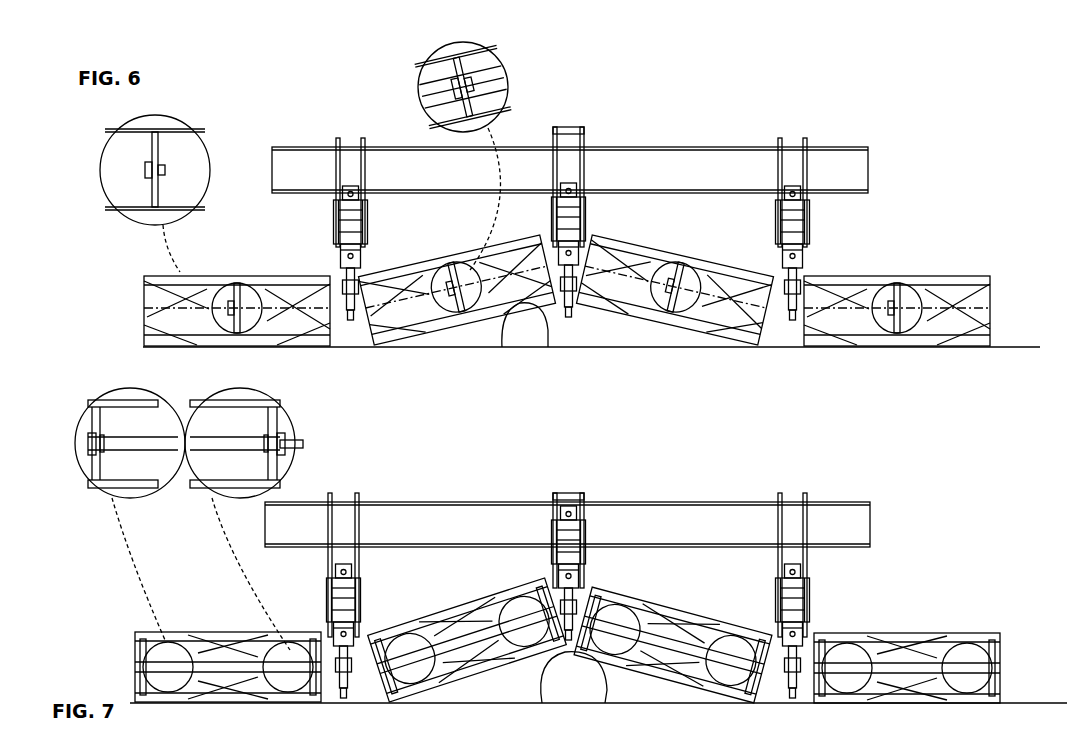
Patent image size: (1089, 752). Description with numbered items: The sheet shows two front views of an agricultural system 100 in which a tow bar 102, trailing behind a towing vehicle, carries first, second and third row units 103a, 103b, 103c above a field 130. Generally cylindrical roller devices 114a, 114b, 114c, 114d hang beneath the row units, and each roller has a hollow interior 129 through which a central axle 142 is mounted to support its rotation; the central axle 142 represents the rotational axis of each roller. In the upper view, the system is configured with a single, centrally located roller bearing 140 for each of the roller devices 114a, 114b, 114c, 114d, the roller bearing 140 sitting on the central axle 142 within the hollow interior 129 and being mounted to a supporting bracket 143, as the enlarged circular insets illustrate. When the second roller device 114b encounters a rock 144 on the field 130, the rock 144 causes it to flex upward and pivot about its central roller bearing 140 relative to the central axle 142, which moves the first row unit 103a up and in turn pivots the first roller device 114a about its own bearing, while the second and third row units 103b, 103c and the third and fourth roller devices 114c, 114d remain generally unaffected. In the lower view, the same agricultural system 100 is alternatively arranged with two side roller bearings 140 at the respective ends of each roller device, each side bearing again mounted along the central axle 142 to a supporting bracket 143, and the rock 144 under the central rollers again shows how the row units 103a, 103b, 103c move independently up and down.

In FIG. 6, the agricultural system 100 is at (968, 92).
In FIG. 7, the agricultural system 100 is at (968, 444).
In FIG. 6, the tow bar 102 is at (860, 175).
In FIG. 7, the tow bar 102 is at (860, 528).
In FIG. 6, the first row unit 103a is at (588, 214).
In FIG. 7, the first row unit 103a is at (588, 570).
In FIG. 6, the second row unit 103b is at (368, 238).
In FIG. 7, the second row unit 103b is at (366, 590).
In FIG. 6, the third row unit 103c is at (808, 238).
In FIG. 7, the third row unit 103c is at (808, 590).
In FIG. 6, the first roller device 114a is at (722, 316).
In FIG. 7, the first roller device 114a is at (718, 645).
In FIG. 6, the second roller device 114b is at (418, 318).
In FIG. 7, the second roller device 114b is at (490, 625).
In FIG. 6, the third roller device 114c is at (165, 323).
In FIG. 7, the third roller device 114c is at (188, 655).
In FIG. 6, the fourth roller device 114d is at (962, 328).
In FIG. 7, the fourth roller device 114d is at (955, 655).
In FIG. 6, the hollow interior 129 is at (440, 105).
In FIG. 6, the field 130 is at (1032, 346).
In FIG. 7, the field 130 is at (1038, 702).
In FIG. 6, the roller bearing 140 is at (146, 170).
In FIG. 7, the roller bearing 140 is at (88, 440).
In FIG. 6, the central axle 142 is at (188, 166).
In FIG. 7, the central axle 142 is at (118, 437).
In FIG. 6, the supporting bracket 143 is at (148, 150).
In FIG. 7, the supporting bracket 143 is at (92, 420).
In FIG. 6, the rock 144 is at (518, 325).
In FIG. 7, the rock 144 is at (560, 690).